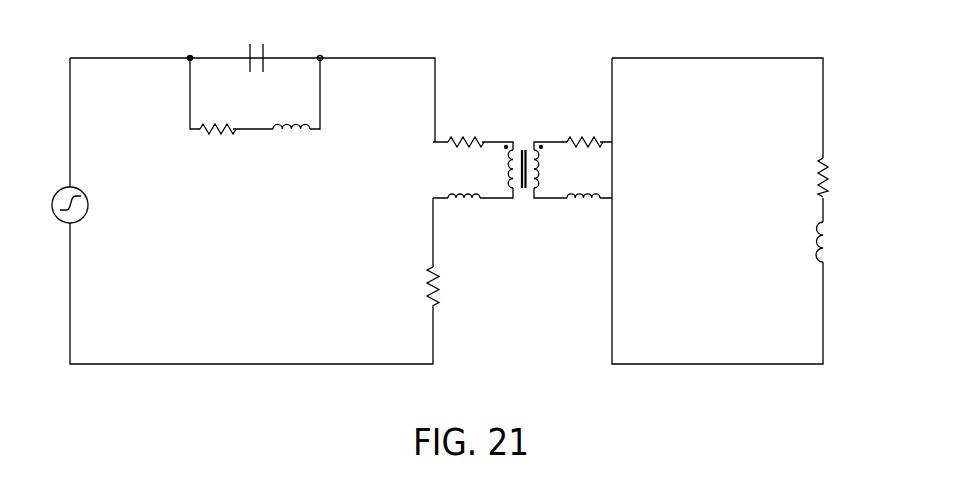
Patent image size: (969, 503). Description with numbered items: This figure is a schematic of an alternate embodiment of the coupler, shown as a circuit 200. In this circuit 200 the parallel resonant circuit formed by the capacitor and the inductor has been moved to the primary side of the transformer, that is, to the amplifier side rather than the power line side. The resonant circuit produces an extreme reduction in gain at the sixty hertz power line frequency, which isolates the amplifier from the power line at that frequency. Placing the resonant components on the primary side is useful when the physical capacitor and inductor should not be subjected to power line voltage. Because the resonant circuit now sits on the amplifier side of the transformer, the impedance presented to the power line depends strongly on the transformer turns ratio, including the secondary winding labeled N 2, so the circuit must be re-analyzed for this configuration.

The circuit 200 is at (610, 34).
The secondary winding N2 2 is at (546, 169).